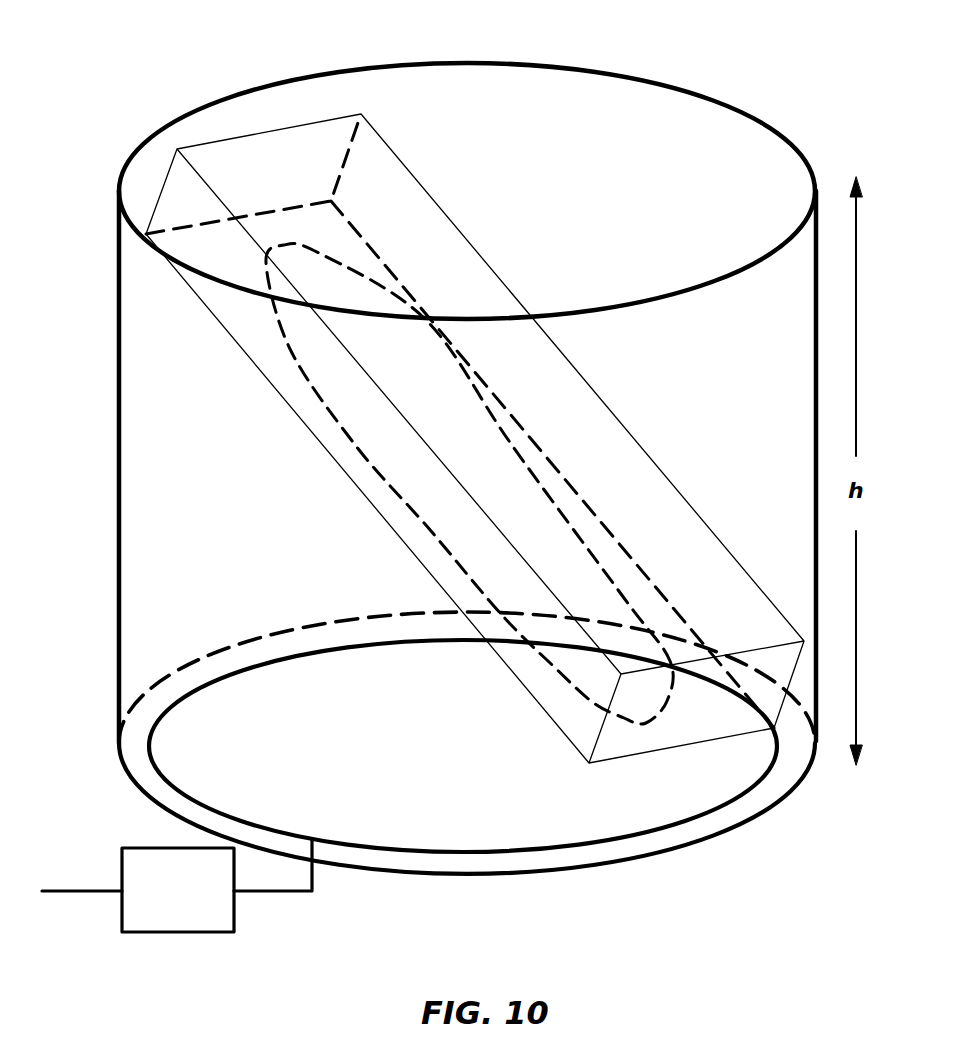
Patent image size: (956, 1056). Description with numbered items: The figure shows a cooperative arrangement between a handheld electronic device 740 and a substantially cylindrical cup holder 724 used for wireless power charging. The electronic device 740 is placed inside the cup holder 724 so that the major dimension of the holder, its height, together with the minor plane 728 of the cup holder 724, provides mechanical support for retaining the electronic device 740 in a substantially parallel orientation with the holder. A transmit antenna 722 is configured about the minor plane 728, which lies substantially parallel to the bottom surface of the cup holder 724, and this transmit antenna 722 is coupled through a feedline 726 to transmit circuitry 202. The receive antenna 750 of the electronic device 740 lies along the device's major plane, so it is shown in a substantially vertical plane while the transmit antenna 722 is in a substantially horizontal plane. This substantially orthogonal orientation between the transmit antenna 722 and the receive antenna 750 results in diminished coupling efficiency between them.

The cup holder 724 is at (117, 200).
The handheld electronic device 740 is at (258, 130).
The receive antenna 750 is at (357, 447).
The transmit antenna 722 is at (206, 684).
The minor plane 728 is at (768, 782).
The feedline 726 is at (283, 892).
The transmit circuitry 202 is at (177, 899).